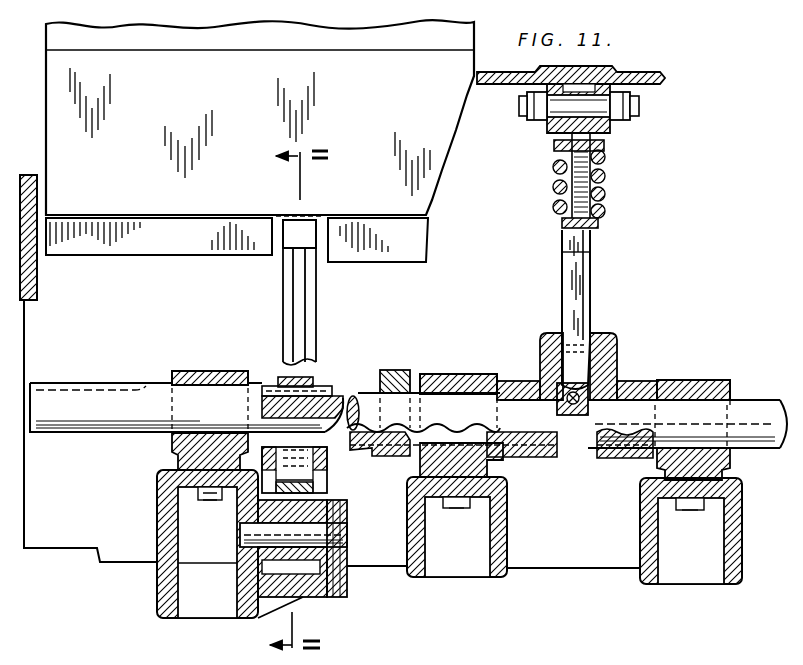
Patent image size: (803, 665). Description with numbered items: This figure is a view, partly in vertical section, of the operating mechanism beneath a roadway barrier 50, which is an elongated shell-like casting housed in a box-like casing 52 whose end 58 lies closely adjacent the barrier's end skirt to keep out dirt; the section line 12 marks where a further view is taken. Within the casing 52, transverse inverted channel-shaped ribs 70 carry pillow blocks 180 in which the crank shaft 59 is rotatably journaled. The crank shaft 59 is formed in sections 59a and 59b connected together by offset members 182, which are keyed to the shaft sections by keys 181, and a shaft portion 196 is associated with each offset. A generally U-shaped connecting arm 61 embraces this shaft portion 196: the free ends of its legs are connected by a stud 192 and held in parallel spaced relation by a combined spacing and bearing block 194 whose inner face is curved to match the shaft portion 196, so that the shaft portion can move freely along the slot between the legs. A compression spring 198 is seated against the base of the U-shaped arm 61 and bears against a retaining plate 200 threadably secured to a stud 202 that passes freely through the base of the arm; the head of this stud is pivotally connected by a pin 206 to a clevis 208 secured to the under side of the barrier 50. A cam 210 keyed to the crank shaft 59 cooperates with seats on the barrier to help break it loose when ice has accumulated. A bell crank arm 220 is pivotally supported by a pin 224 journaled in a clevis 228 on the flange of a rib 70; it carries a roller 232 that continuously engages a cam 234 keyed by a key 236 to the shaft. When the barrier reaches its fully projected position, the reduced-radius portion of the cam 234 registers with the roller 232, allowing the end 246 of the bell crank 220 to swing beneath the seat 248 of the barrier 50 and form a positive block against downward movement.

The barrier 50 is at (260, 141).
The section line 12- 12 is at (278, 405).
The seat 248 is at (330, 203).
The end of bell crank 246 is at (316, 234).
The arm 220 is at (306, 300).
The end of casing 58 is at (40, 277).
The casing 52 is at (90, 431).
The shaft section 59a is at (58, 440).
The shaft section 59b is at (567, 420).
The crank shaft 59 is at (644, 380).
The pillow block 180 is at (193, 372).
The cam 234 is at (298, 378).
The key 236 is at (316, 388).
The transverse rib 70 is at (162, 506).
The roller 232 is at (308, 492).
The pin 224 is at (332, 525).
The clevis 228 is at (342, 548).
The key 181 is at (612, 438).
The cam 210 is at (394, 371).
The shaft portion 196 is at (545, 365).
The offset member 182 is at (592, 358).
The spacing and bearing block 194 is at (600, 381).
The stud 192 is at (575, 420).
The arm 61 is at (592, 279).
The retaining plate 200 is at (598, 226).
The stud 202 is at (600, 160).
The compression spring 198 is at (604, 190).
The clevis 208 is at (612, 134).
The pin 206 is at (575, 102).